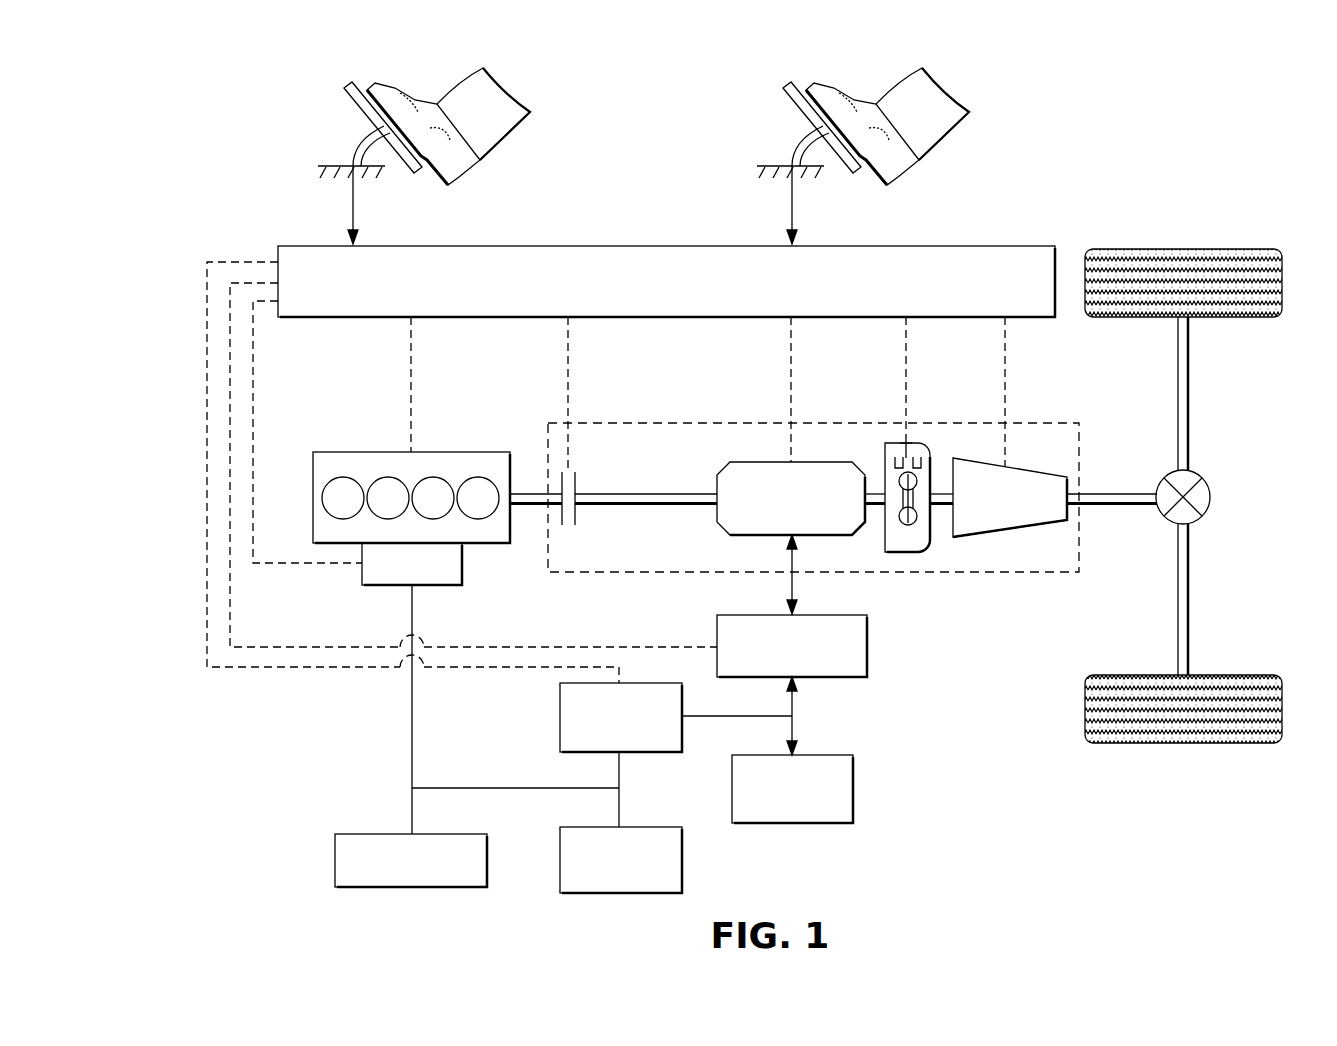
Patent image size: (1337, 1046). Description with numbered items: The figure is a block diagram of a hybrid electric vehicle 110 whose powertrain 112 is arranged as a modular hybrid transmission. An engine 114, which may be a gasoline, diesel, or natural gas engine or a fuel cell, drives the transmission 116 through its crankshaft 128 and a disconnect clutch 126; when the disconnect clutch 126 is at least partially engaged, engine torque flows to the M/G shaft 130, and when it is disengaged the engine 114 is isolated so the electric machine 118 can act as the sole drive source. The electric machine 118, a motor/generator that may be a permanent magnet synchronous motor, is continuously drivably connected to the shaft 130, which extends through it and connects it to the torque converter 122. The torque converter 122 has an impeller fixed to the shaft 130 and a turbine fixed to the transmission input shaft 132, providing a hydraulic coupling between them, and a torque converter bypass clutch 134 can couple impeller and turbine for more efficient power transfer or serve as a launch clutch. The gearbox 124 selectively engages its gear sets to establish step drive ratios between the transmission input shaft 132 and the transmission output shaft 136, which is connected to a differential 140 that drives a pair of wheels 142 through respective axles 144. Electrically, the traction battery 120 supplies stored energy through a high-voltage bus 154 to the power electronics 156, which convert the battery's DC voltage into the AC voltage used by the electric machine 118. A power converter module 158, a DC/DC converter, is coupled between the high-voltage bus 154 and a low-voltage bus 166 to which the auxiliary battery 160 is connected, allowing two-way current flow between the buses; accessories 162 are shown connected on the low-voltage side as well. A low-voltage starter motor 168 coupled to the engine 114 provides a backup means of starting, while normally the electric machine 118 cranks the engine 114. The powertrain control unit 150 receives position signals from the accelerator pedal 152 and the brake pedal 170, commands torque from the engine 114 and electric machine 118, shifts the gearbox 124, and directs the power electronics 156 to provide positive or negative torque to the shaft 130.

The hybrid electric vehicle 110 is at (1056, 100).
The powertrain 112 is at (962, 714).
The engine 114 is at (375, 452).
The transmission 116 is at (871, 423).
The electric machine (M/G) 118 is at (760, 462).
The traction battery 120 is at (853, 787).
The torque converter 122 is at (905, 553).
The gearbox 124 is at (1010, 538).
The disconnect clutch 126 is at (578, 480).
The crankshaft 128 is at (540, 490).
The M/G shaft 130 is at (660, 490).
The transmission input shaft 132 is at (941, 488).
The torque converter bypass clutch 134 is at (907, 445).
The transmission output shaft 136 is at (1123, 492).
The differential 140 is at (1211, 497).
The wheels 142 is at (1182, 248).
The axles 144 is at (1191, 397).
The powertrain control unit (PCU) 150 is at (612, 245).
The accelerator pedal 152 is at (363, 118).
The high-voltage bus 154 is at (797, 718).
The power electronics 156 is at (867, 647).
The power converter module 158 is at (560, 715).
The auxiliary battery 160 is at (560, 858).
The accessories 162 is at (335, 860).
The low-voltage bus 166 is at (410, 722).
The low-voltage starter motor 168 is at (462, 567).
The brake pedal 170 is at (802, 118).